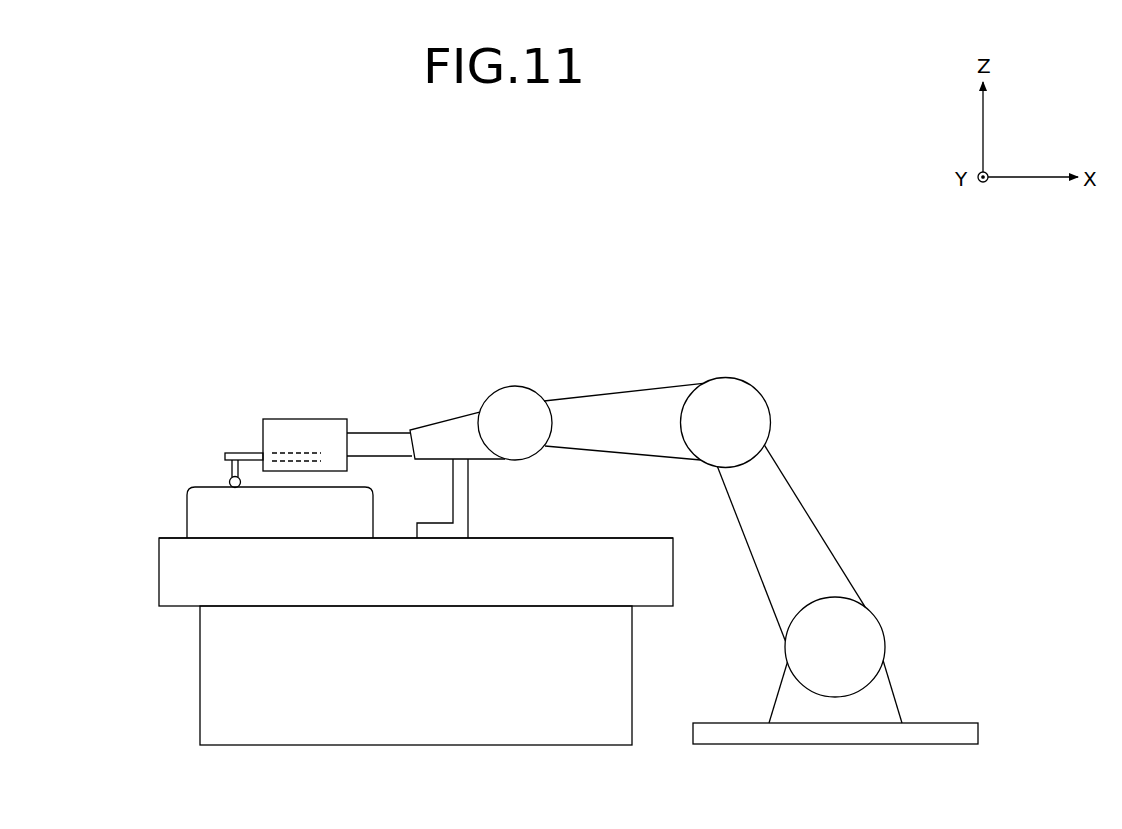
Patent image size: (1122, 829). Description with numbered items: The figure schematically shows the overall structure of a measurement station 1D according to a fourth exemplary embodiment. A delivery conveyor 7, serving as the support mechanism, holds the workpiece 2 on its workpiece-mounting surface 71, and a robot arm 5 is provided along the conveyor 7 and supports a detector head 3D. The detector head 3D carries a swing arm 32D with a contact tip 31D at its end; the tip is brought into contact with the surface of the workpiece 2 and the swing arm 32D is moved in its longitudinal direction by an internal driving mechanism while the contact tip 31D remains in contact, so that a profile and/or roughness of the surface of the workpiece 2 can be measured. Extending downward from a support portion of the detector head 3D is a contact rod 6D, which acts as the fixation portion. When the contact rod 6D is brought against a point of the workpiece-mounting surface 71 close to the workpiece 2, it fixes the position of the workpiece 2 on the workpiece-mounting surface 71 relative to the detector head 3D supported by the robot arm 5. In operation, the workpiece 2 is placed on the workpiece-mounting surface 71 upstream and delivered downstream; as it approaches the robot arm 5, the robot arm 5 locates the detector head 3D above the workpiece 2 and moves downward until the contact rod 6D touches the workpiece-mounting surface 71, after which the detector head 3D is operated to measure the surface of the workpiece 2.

The measurement station 1D is at (473, 290).
The workpiece 2 is at (190, 492).
The detector head 3D is at (292, 404).
The contact tip 31D is at (228, 480).
The swing arm 32D is at (240, 452).
The robot arm 5 is at (752, 378).
The contact rod 6D is at (468, 513).
The delivery conveyor 7 is at (160, 538).
The workpiece-mounting surface 71 is at (585, 537).